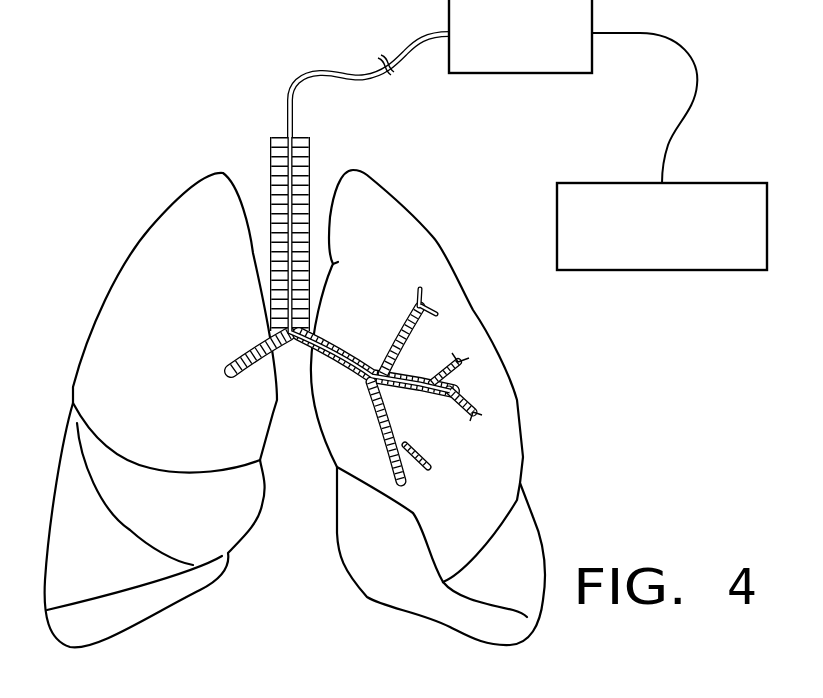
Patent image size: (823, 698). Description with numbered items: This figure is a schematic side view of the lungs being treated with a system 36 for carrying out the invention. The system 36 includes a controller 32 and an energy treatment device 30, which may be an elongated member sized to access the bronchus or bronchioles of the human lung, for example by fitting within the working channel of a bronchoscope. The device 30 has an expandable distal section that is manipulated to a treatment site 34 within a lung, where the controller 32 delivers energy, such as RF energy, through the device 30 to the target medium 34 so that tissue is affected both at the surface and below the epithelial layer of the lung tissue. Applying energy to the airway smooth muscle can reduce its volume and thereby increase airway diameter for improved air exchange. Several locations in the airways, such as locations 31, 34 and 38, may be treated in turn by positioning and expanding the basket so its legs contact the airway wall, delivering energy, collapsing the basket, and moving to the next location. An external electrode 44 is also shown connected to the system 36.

The energy treatment device 30 is at (348, 82).
The treatment location 31 is at (407, 363).
The controller 32 is at (517, 73).
The treatment site 34 is at (457, 387).
The system 36 is at (672, 335).
The treatment location 38 is at (474, 405).
The external electrode 44 is at (727, 183).